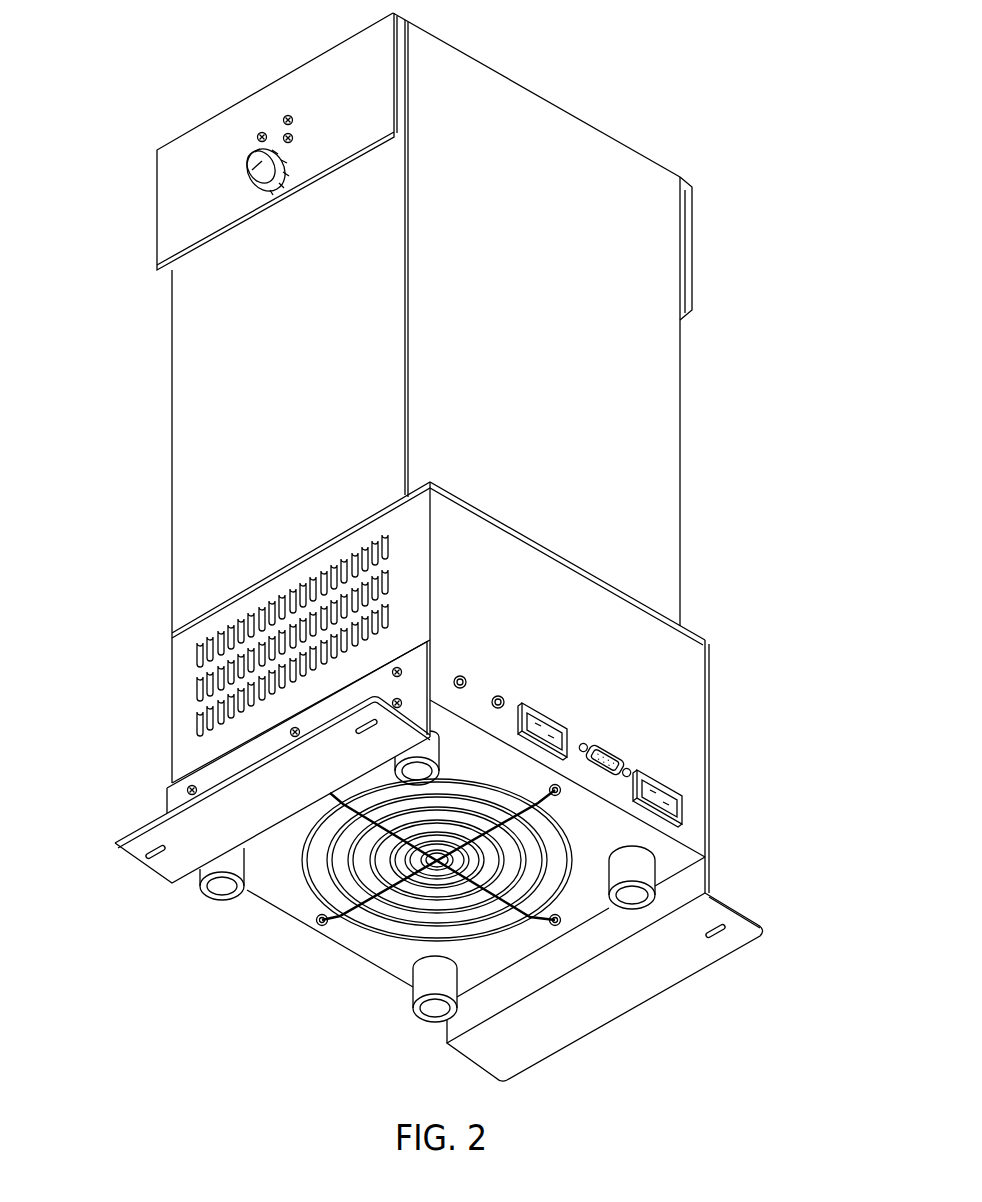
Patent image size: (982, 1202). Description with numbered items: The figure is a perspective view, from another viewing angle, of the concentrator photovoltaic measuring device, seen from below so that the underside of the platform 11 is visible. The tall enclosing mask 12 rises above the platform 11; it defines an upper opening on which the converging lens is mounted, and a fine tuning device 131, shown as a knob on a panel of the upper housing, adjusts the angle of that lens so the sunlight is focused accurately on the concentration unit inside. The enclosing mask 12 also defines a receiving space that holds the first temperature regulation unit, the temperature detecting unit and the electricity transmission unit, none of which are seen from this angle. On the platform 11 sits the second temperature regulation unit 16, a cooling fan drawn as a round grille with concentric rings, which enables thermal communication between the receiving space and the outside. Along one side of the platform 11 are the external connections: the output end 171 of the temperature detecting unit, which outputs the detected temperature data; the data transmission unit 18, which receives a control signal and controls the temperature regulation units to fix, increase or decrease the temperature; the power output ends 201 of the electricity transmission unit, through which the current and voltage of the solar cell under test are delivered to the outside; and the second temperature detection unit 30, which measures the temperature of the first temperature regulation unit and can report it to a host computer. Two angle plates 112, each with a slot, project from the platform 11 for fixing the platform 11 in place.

The platform 11 is at (697, 808).
The angle plates 112 is at (142, 847).
The enclosing mask 12 is at (636, 167).
The fine tuning device 131 is at (256, 166).
The second temperature regulation unit 16 is at (312, 901).
The output end 171 is at (550, 723).
The data transmission unit 18 is at (620, 753).
The power output end 201 is at (467, 678).
The second temperature detection unit 30 is at (677, 808).